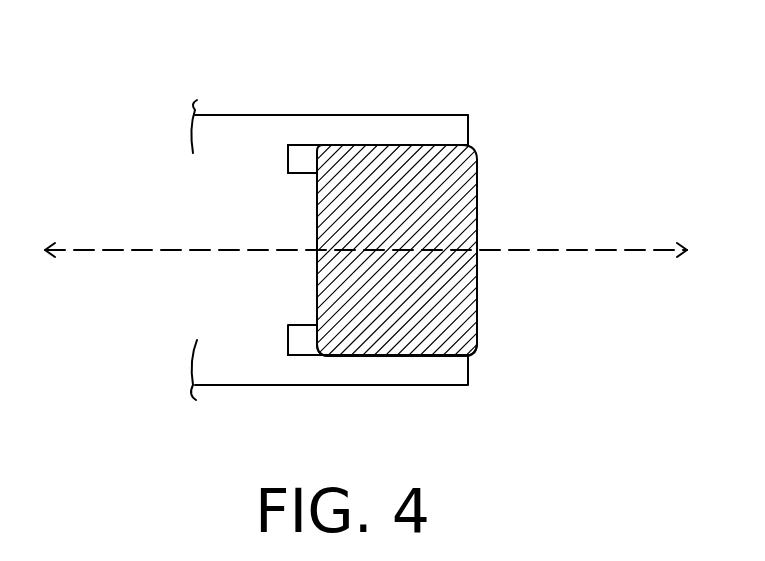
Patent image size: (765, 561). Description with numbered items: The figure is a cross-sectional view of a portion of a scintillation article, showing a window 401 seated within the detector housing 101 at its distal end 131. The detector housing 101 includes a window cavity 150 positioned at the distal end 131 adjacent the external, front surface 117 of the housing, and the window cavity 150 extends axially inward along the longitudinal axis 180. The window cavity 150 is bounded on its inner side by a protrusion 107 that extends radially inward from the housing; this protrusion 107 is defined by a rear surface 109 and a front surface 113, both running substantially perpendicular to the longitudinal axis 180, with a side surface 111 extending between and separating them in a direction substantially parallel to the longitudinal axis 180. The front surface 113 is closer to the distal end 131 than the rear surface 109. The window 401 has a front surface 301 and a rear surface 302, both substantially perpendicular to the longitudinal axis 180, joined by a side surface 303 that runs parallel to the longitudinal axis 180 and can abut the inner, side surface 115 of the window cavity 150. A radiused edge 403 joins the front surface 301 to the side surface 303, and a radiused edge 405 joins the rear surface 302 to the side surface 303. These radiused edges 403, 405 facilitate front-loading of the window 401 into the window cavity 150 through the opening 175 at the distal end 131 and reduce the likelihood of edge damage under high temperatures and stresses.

The detector housing 101 is at (297, 100).
The protrusion 107 is at (259, 96).
The rear surface 109 is at (226, 165).
The side surface 111 is at (241, 198).
The front surface 113 is at (365, 137).
The inner, side surface 115 is at (369, 379).
The external, front surface 117 is at (540, 126).
The distal end 131 is at (490, 388).
The window cavity 150 is at (452, 285).
The opening 175 is at (490, 175).
The longitudinal axis 180 is at (382, 269).
The front surface 301 is at (545, 251).
The rear surface 302 is at (244, 247).
The side surface 303 is at (431, 112).
The window 401 is at (534, 232).
The radiused edge 403 is at (532, 362).
The radiused edge 405 is at (270, 386).